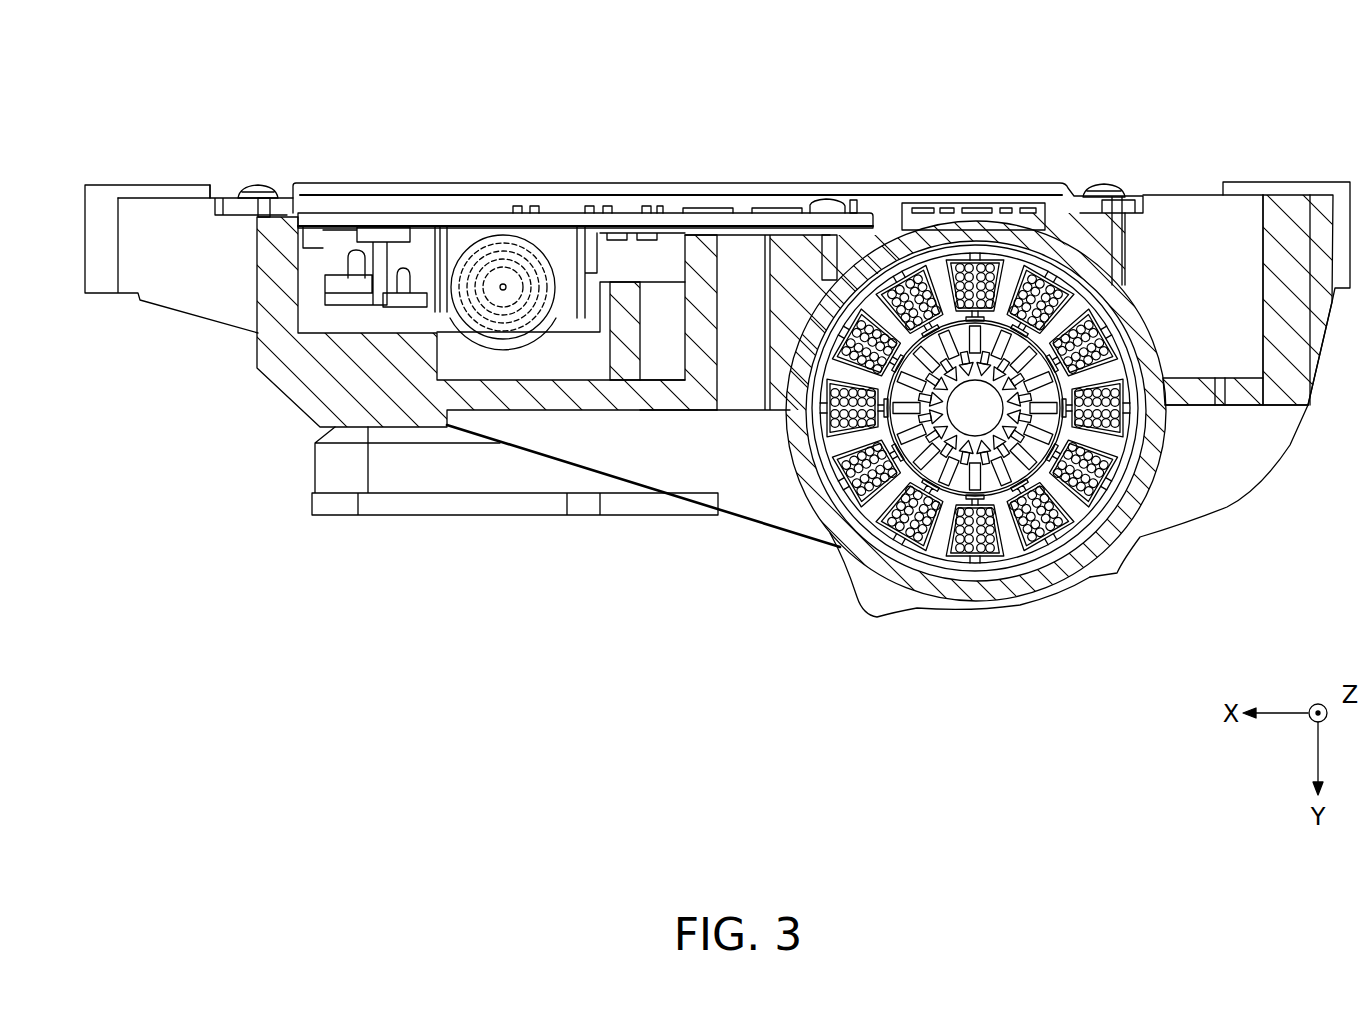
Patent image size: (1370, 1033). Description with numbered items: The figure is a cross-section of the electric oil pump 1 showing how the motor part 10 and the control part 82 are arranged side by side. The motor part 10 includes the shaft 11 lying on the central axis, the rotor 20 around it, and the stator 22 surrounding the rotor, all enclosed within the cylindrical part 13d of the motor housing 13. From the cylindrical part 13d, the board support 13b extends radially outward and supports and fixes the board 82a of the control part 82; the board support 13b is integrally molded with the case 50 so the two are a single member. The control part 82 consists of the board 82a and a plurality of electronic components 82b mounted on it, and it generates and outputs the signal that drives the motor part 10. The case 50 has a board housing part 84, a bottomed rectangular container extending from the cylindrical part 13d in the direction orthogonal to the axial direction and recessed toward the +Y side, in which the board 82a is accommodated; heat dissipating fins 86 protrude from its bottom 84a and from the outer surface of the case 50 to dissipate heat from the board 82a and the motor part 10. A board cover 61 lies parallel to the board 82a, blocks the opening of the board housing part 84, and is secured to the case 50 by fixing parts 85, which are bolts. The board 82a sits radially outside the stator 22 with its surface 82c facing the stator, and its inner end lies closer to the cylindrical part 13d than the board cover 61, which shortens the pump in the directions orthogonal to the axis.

The electric oil pump 1 is at (1194, 103).
The motor part 10 is at (1050, 607).
The shaft 11 is at (975, 420).
The motor housing 13 is at (1136, 540).
The board support 13b is at (852, 232).
The cylindrical part 13d is at (1070, 557).
The rotor 20 is at (900, 490).
The stator 22 is at (1008, 567).
The case 50 is at (1200, 530).
The board cover 61 is at (952, 182).
The control part 82 is at (665, 198).
The board 82a is at (590, 222).
The electronic components 82b is at (777, 207).
The surface 82c is at (500, 232).
The board housing part 84 is at (652, 256).
The bottom 84a is at (665, 398).
The fixing part 85 is at (1098, 185).
The heat dissipating fin 86 is at (758, 502).